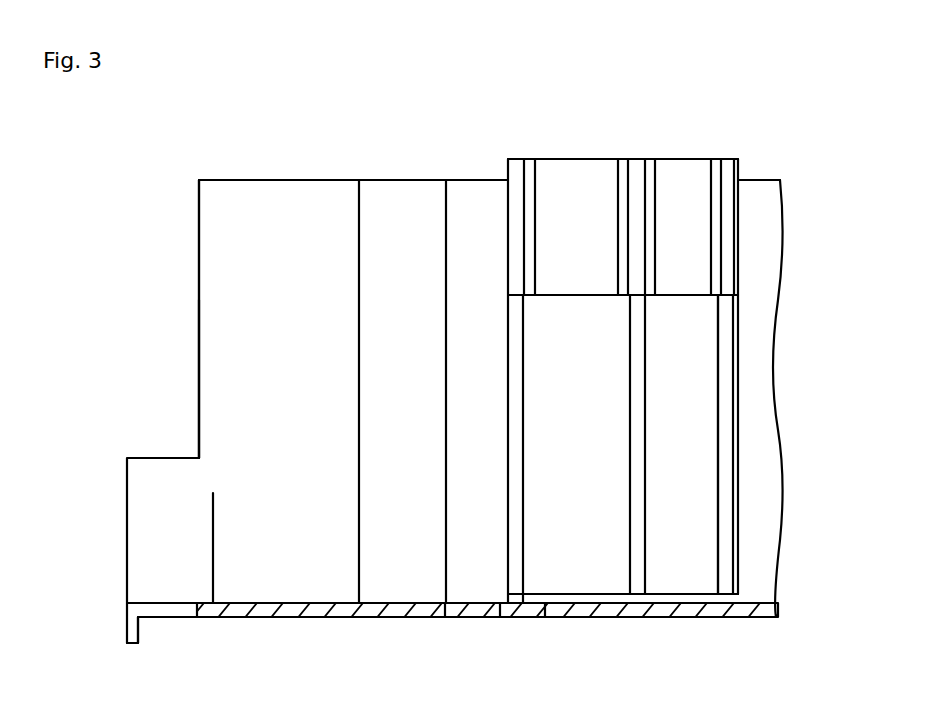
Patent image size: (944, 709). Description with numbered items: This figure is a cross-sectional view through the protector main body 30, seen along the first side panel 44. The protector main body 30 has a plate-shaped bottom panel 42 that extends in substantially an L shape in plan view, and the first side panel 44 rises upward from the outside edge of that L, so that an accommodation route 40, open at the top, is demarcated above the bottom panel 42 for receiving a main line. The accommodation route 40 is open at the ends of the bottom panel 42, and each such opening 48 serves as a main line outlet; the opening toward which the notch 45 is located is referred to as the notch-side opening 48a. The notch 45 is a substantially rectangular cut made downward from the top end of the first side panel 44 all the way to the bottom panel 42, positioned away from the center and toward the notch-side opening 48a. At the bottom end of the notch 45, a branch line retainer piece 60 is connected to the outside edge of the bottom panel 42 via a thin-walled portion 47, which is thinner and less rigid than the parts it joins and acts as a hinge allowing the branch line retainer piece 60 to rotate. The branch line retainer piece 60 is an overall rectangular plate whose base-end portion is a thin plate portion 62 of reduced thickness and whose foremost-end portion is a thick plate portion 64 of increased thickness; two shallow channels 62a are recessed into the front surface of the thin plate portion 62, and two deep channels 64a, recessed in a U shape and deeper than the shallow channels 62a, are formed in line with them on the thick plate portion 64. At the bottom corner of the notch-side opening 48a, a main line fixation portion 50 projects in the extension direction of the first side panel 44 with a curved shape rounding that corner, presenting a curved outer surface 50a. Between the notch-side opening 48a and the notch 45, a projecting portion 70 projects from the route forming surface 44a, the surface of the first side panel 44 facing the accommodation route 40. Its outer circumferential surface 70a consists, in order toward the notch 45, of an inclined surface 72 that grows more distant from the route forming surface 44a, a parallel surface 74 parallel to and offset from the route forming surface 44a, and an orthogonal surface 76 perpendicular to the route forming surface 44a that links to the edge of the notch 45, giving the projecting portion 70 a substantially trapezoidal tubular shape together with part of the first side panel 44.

The protector main body 30 is at (134, 161).
The accommodation route 40 is at (333, 199).
The bottom panel 42 is at (306, 618).
The first side panel 44 is at (379, 158).
The route forming surface 44a is at (235, 196).
The notch 45 is at (718, 500).
The thin-walled portion 47 is at (695, 600).
The opening 48 is at (157, 356).
The notch-side opening 48a is at (199, 233).
The main line fixation portion 50 is at (150, 522).
The curved outer surface 50a is at (163, 621).
The branch line retainer piece 60 is at (838, 220).
The thin plate portion 62 is at (740, 443).
The shallow channels 62a is at (697, 622).
The thick plate portion 64 is at (740, 225).
The deep channels 64a is at (674, 158).
The projecting portion 70 is at (514, 653).
The outer circumferential surface 70a is at (550, 665).
The inclined surface 72 is at (415, 580).
The parallel surface 74 is at (478, 575).
The orthogonal surface 76 is at (508, 572).